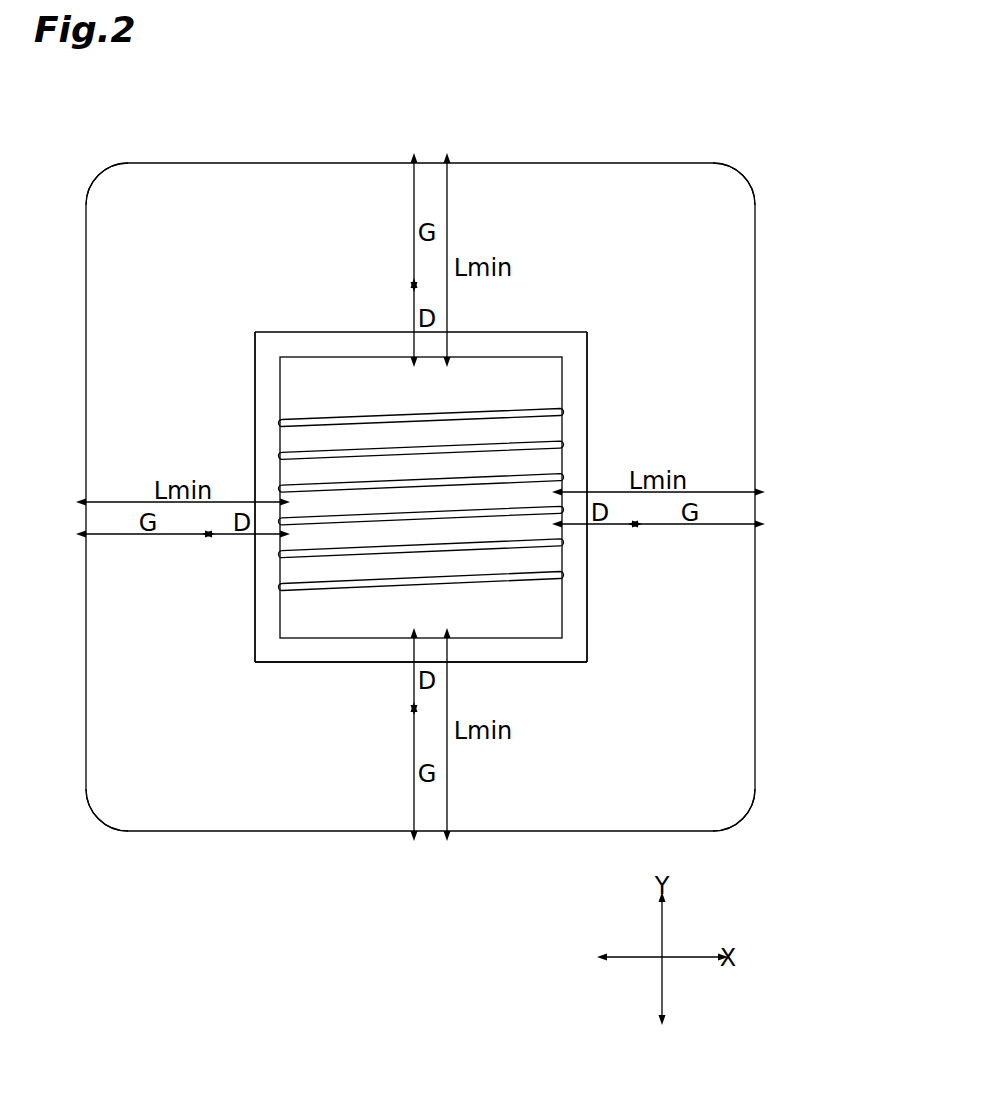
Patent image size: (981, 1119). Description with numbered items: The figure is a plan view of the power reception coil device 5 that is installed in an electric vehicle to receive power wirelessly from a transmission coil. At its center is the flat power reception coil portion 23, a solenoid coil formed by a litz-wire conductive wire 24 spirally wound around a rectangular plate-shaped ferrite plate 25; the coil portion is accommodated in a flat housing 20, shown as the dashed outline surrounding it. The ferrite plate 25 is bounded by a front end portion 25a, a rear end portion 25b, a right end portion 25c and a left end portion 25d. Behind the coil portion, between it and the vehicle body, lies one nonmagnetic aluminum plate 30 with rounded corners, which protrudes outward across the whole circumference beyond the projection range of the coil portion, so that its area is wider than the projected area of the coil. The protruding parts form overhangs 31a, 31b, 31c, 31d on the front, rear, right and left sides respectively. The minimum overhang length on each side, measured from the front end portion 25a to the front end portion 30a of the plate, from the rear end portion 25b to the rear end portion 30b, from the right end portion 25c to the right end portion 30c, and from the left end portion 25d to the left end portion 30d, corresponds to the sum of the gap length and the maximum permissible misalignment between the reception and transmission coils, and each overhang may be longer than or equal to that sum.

The power reception coil device 5 is at (477, 130).
The housing 20 is at (567, 331).
The power reception coil portion 23 is at (297, 652).
The conductive wire 24 is at (520, 408).
The ferrite plate 25 is at (327, 355).
The front end portion 25a is at (378, 355).
The rear end portion 25b is at (538, 640).
The right end portion 25c is at (562, 600).
The left end portion 25d is at (280, 432).
The aluminum plate 30 is at (658, 162).
The front end portion 30a is at (305, 163).
The rear end portion 30b is at (372, 831).
The right end portion 30c is at (755, 478).
The left end portion 30d is at (86, 485).
The overhang 31a is at (347, 203).
The overhang 31b is at (478, 795).
The overhang 31c is at (718, 580).
The overhang 31d is at (125, 582).